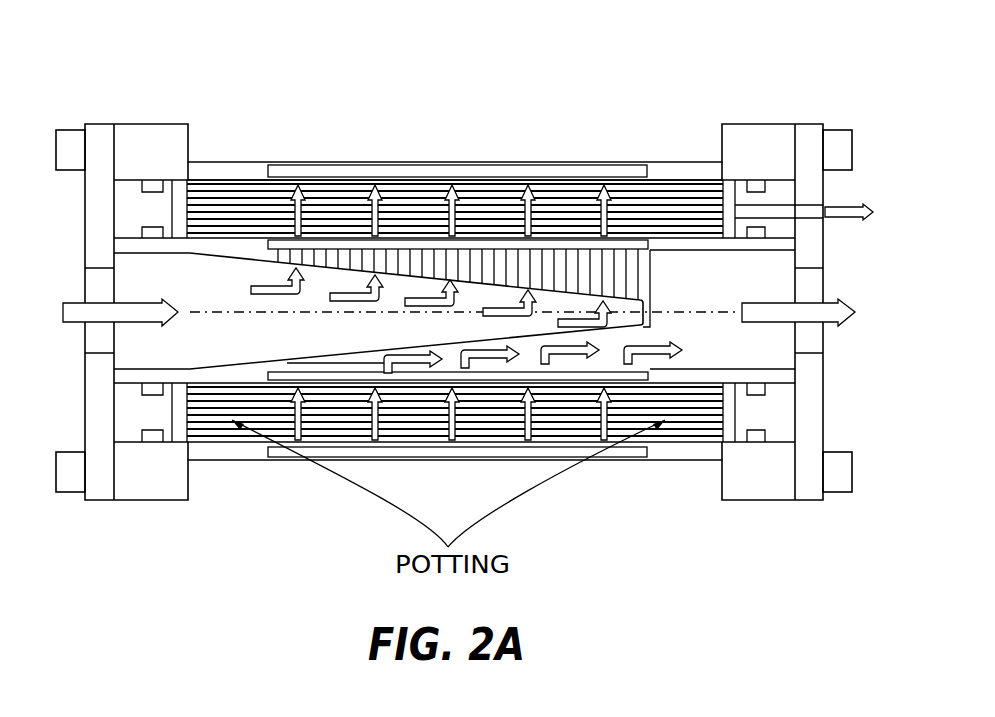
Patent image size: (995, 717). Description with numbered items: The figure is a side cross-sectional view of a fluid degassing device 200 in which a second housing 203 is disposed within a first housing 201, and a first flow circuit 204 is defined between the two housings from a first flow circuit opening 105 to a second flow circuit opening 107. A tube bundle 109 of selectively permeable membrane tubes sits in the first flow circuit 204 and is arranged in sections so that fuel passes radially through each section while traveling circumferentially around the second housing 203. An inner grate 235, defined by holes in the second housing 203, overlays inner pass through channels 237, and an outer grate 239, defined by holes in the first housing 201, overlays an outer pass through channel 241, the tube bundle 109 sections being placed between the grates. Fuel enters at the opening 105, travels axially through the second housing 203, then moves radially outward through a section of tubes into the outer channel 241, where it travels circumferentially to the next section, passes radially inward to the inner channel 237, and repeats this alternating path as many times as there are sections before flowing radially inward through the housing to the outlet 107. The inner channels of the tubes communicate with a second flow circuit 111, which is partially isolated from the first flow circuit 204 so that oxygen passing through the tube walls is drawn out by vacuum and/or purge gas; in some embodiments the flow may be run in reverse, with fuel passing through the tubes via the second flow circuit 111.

The device 200 is at (248, 65).
The tube bundle 109 is at (278, 208).
The first housing 201 is at (248, 172).
The second housing 203 is at (125, 245).
The first flow circuit 204 is at (232, 354).
The first flow circuit opening 105 is at (117, 347).
The second flow circuit opening 107 is at (797, 283).
The second flow circuit 111 is at (727, 192).
The inner grate 235 is at (605, 200).
The inner pass through channel 237 is at (485, 245).
The outer grate 239 is at (574, 178).
The outer pass through channel 241 is at (400, 168).